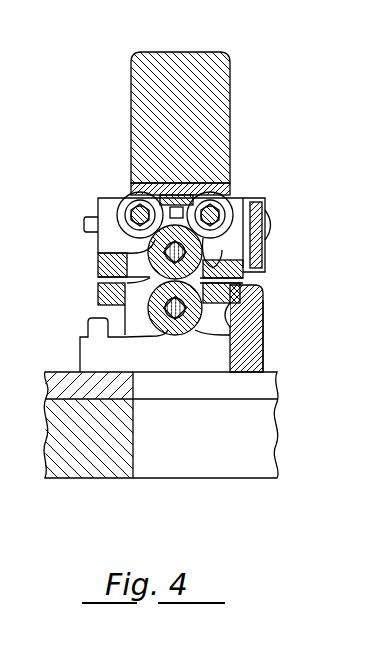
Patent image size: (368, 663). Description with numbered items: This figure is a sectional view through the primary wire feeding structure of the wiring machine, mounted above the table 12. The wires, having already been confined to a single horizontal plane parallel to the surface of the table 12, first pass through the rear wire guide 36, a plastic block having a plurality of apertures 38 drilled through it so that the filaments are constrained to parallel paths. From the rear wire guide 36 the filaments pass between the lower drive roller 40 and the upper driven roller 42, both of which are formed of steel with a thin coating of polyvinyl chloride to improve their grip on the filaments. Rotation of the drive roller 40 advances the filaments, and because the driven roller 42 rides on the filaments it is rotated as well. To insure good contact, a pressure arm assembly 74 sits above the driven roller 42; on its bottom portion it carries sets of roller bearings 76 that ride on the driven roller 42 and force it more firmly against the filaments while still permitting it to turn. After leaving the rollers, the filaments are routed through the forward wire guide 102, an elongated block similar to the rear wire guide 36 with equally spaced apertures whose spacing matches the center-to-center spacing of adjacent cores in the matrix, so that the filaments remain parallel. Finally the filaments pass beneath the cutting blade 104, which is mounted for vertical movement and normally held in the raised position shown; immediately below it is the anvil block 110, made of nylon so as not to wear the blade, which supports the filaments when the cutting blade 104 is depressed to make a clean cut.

The table 12 is at (278, 431).
The rear wire guide 36 is at (98, 299).
The apertures 38 is at (98, 279).
The lower drive roller 40 is at (80, 338).
The upper driven roller 42 is at (148, 243).
The pressure arm assembly 74 is at (195, 52).
The roller bearings 76 is at (122, 198).
The forward wire guide 102 is at (231, 329).
The cutting blade 104 is at (257, 270).
The anvil block 110 is at (264, 351).